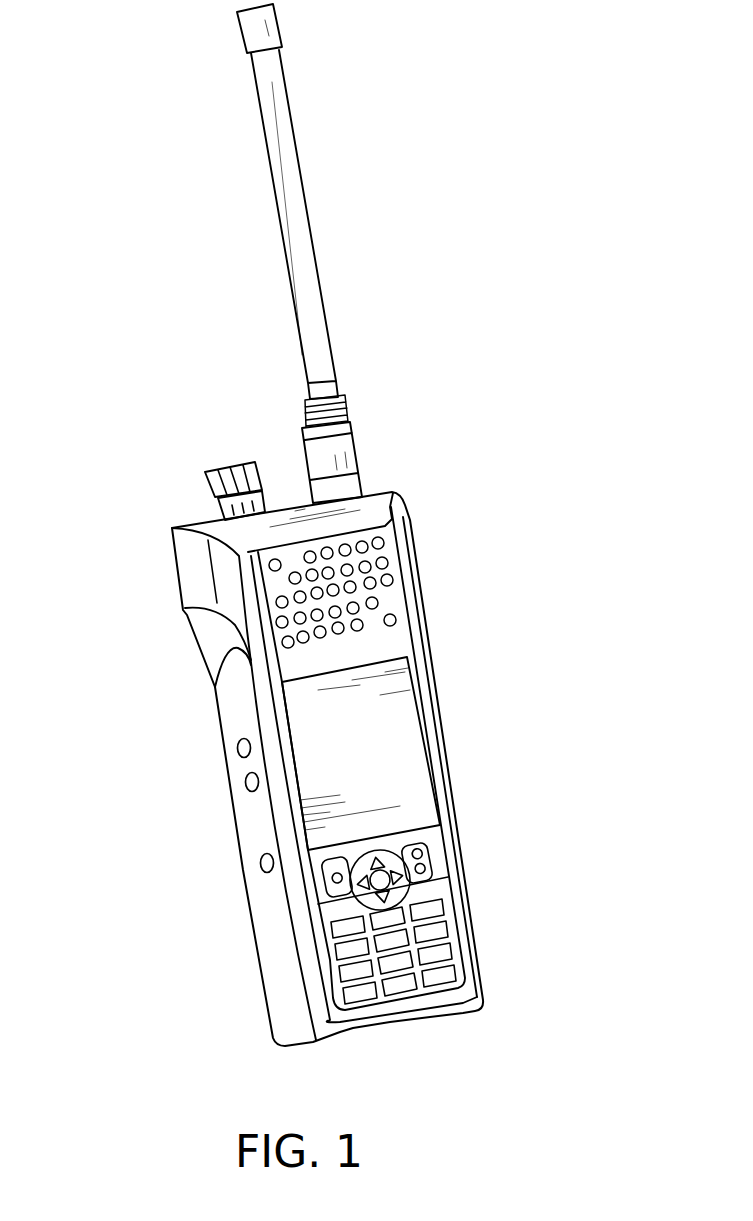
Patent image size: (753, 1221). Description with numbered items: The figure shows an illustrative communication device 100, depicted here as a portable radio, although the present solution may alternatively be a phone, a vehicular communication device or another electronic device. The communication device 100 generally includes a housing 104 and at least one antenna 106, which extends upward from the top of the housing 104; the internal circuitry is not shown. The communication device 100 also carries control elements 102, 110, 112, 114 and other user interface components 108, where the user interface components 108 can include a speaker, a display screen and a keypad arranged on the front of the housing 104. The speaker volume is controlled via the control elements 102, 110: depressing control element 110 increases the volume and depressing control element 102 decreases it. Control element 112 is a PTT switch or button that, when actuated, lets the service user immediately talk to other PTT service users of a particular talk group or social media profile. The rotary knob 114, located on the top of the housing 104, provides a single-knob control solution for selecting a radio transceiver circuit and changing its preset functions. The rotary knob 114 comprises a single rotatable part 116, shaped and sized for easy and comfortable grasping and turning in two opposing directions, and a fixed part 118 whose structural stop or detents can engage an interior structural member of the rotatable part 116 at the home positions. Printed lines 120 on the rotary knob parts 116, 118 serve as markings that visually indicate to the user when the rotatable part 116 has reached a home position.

The communication device 100 is at (503, 127).
The control element 102 is at (242, 783).
The housing 104 is at (212, 720).
The antenna 106 is at (337, 288).
The user interface components 108 is at (405, 585).
The control element 110 is at (233, 750).
The control element 112 is at (258, 863).
The rotary knob 114 is at (208, 457).
The rotatable part 116 is at (207, 487).
The fixed part 118 is at (217, 508).
The lines 120 is at (263, 500).